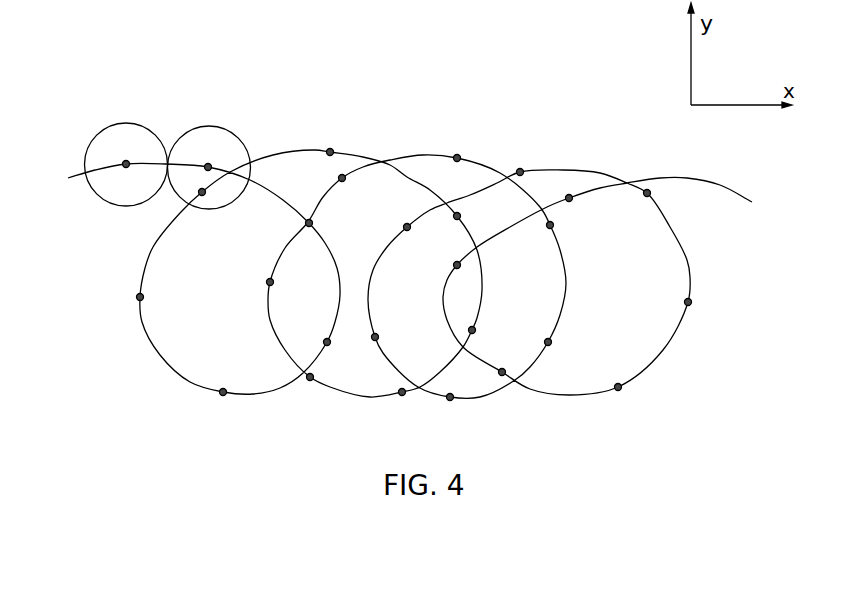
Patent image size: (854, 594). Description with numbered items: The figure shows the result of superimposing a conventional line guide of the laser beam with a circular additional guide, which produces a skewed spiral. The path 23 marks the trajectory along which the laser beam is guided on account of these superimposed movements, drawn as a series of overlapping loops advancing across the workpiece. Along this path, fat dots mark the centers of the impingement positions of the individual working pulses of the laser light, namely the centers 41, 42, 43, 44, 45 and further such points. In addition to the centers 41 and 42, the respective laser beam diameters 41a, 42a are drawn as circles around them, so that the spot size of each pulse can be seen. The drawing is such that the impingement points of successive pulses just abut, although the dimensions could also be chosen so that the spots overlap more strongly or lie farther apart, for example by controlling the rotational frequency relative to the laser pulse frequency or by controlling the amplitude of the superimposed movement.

The path 23 is at (157, 353).
The laser beam diameter 41a is at (97, 135).
The center of impingement position 41 is at (126, 164).
The laser beam diameter 42a is at (195, 128).
The center of impingement position 42 is at (208, 167).
The center of impingement position 43 is at (309, 223).
The center of impingement position 44 is at (327, 340).
The center of impingement position 45 is at (223, 393).